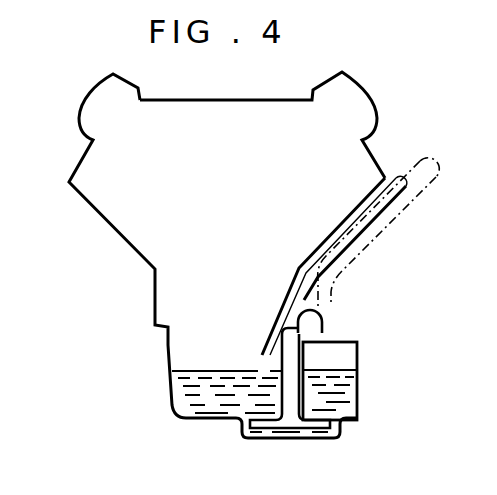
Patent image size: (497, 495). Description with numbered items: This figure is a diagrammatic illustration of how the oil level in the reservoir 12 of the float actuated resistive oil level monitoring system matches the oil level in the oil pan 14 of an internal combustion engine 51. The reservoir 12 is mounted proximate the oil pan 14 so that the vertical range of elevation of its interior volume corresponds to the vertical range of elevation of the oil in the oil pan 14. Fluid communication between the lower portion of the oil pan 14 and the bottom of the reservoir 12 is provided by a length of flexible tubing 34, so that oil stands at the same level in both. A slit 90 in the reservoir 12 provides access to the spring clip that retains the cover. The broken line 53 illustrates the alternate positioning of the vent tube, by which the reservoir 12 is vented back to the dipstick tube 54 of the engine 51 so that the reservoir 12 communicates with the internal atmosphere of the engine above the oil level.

The internal combustion engine 51 is at (128, 241).
The dipstick tube 54 is at (383, 205).
The broken line 53 is at (356, 268).
The slit 90 is at (322, 329).
The flexible tubing 34 is at (301, 438).
The reservoir 12 is at (358, 390).
The oil pan 14 is at (167, 365).